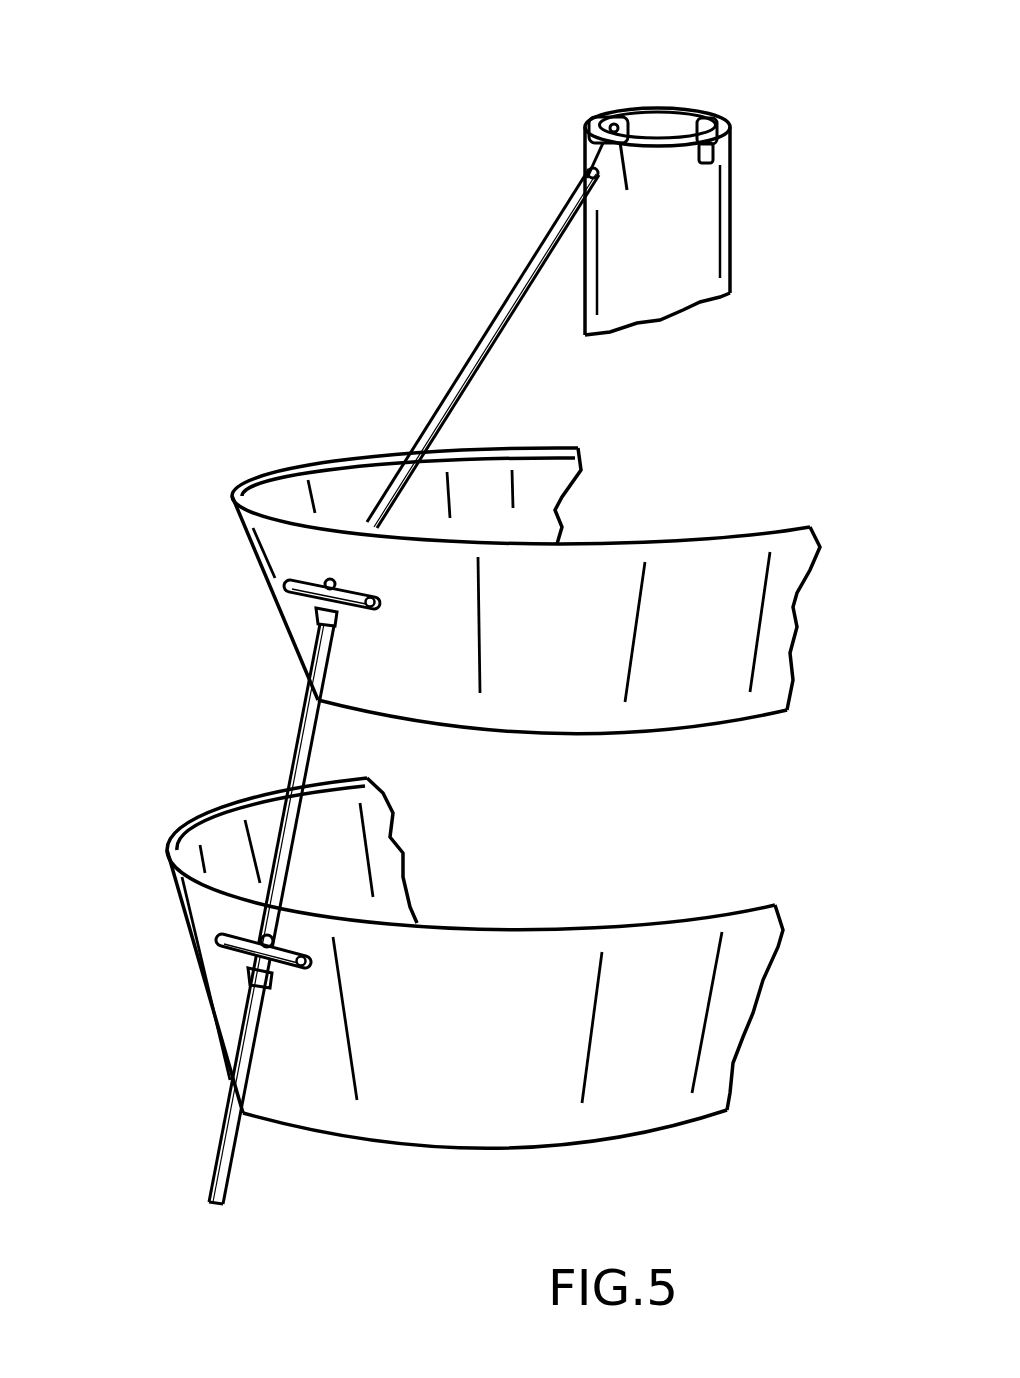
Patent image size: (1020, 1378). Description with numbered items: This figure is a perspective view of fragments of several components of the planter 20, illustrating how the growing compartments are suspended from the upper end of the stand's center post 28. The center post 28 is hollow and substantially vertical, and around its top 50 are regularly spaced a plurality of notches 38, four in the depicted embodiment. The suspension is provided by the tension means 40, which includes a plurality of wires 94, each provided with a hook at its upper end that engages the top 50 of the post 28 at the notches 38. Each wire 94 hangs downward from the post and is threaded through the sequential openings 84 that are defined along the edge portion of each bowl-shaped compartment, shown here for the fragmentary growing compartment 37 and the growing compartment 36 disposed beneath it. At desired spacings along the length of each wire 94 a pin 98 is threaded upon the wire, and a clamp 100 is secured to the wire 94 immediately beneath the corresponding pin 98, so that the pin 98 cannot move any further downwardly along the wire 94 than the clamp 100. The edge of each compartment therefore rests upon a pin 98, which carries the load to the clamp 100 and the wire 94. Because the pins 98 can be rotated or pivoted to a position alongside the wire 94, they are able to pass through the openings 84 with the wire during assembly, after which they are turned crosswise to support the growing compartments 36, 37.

The planter 20 is at (470, 172).
The tension means 40 is at (436, 246).
The notches 38 is at (597, 120).
The top of the post 50 is at (660, 107).
The center post 28 is at (690, 250).
The wire 94 is at (470, 352).
The growing compartment 37 is at (663, 592).
The growing compartment 36 is at (727, 963).
The openings 84 is at (325, 581).
The pin 98 is at (290, 603).
The clamp 100 is at (312, 626).